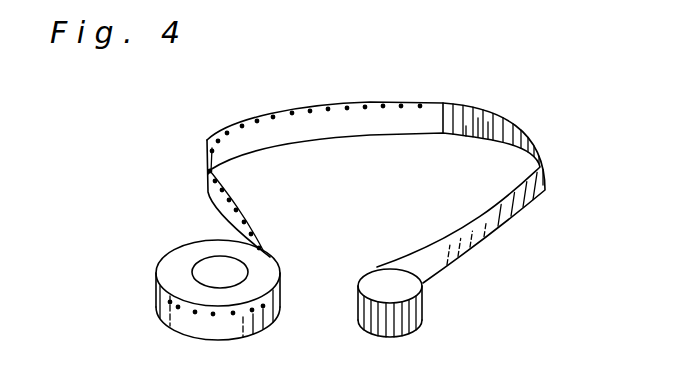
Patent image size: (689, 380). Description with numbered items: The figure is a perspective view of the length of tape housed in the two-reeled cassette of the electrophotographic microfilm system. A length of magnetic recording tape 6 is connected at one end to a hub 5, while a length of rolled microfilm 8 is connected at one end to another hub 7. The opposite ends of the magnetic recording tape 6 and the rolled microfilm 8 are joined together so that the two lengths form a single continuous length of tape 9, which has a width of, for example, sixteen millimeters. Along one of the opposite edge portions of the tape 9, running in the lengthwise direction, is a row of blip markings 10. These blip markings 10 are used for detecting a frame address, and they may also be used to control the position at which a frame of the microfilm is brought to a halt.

The hub 5 is at (400, 287).
The magnetic recording tape 6 is at (510, 222).
The hub 7 is at (215, 267).
The rolled microfilm 8 is at (273, 130).
The tape 9 is at (500, 105).
The blip markings 10 is at (220, 142).